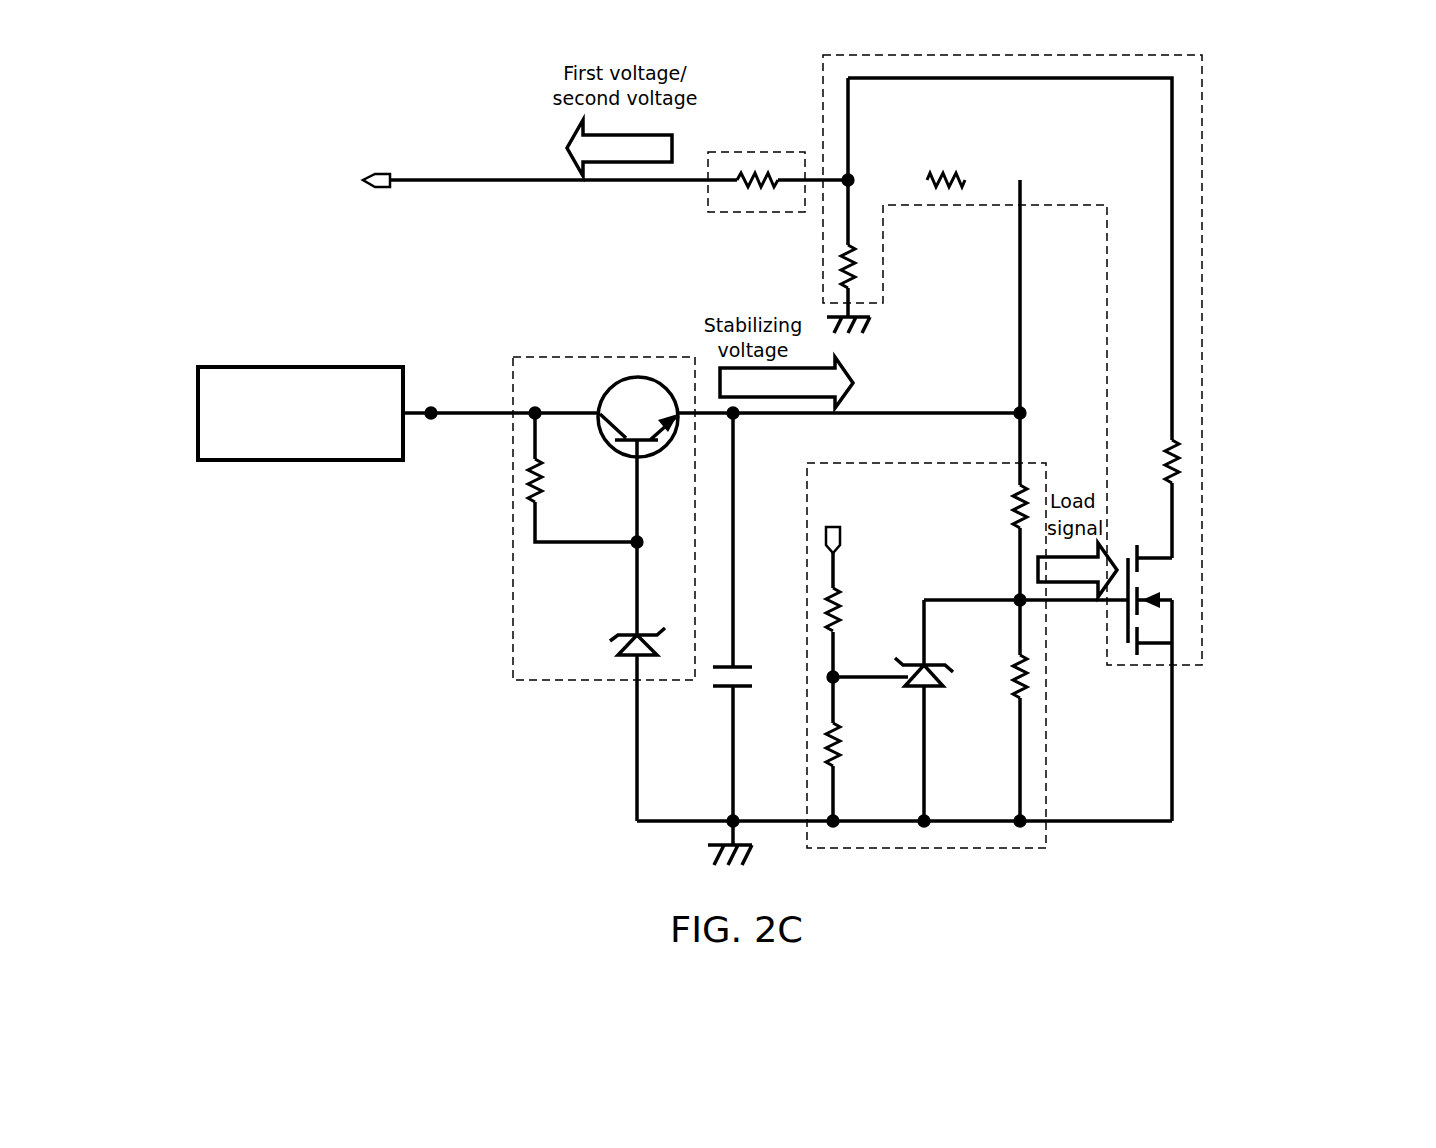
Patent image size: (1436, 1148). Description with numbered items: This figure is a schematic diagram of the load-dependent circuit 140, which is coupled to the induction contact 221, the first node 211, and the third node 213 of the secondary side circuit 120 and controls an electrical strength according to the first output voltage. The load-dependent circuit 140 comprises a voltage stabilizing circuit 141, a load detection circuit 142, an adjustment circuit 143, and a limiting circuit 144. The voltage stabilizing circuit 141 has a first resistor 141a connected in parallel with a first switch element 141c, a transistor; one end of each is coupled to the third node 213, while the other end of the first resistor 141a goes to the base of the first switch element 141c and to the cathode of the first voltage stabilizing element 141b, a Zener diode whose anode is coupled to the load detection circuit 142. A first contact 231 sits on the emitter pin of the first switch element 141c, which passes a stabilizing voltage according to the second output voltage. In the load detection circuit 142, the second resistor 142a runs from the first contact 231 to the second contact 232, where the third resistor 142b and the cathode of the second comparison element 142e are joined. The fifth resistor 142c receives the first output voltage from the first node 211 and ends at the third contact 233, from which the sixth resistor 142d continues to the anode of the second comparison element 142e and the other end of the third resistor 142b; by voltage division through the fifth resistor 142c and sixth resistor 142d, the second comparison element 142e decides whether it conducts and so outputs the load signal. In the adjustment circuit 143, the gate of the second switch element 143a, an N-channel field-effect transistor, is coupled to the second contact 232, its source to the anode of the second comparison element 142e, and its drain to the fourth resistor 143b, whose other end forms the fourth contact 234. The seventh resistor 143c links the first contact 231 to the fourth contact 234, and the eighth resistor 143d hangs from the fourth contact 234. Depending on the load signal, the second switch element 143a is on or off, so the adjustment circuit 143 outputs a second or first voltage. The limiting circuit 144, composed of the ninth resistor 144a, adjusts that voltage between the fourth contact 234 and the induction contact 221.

The secondary side circuit 120 is at (283, 424).
The third node 213 is at (431, 413).
The induction contact 221 is at (367, 186).
The limiting circuit 144 is at (737, 164).
The ninth resistor 144a is at (742, 186).
The voltage stabilizing circuit 141 is at (558, 513).
The first resistor 141a is at (530, 497).
The first voltage stabilizing element 141b is at (630, 658).
The first switch element 141c is at (635, 378).
The first contact 231 is at (1020, 413).
The second contact 232 is at (1020, 600).
The third contact 233 is at (834, 676).
The fourth contact 234 is at (850, 178).
The first node 211 is at (840, 527).
The load detection circuit 142 is at (969, 681).
The second resistor 142a is at (1015, 505).
The third resistor 142b is at (1015, 665).
The fifth resistor 142c is at (836, 590).
The sixth resistor 142d is at (835, 755).
The second comparison element 142e is at (930, 688).
The adjustment circuit 143 is at (1055, 362).
The second switch element 143a is at (1172, 605).
The fourth resistor 143b is at (1170, 440).
The seventh resistor 143c is at (960, 177).
The eighth resistor 143d is at (852, 255).
The load-dependent circuit 140 is at (1291, 762).